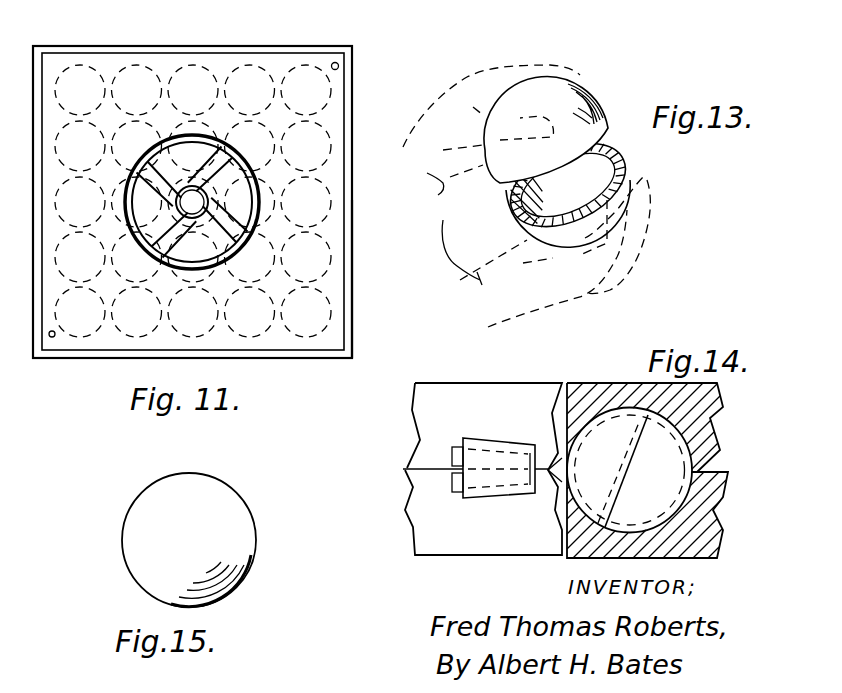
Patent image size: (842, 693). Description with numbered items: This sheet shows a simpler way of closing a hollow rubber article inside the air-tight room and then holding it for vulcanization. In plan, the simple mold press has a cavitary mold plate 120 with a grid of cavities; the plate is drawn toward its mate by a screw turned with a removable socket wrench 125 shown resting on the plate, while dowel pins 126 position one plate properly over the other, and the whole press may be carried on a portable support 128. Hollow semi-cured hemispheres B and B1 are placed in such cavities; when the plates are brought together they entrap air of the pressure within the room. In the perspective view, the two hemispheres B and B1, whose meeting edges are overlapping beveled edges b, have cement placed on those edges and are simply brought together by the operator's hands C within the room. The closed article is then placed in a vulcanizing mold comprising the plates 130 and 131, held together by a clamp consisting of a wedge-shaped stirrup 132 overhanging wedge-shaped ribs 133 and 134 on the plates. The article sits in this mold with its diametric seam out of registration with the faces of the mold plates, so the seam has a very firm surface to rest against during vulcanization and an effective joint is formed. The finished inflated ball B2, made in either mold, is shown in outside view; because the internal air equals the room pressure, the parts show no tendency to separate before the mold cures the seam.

In FIG. 11, the cavitary mold plate 120 is at (285, 352).
In FIG. 11, the removable socket wrench 125 is at (270, 182).
In FIG. 11, the dowel pins 126 is at (339, 66).
In FIG. 11, the portable support 128 is at (353, 243).
In FIG. 11, the hollow hemisphere B is at (330, 318).
In FIG. 13, the hollow hemisphere B is at (546, 130).
In FIG. 14, the hollow hemisphere B is at (629, 470).
In FIG. 13, the hollow hemisphere B1 is at (568, 187).
In FIG. 14, the hollow hemisphere B1 is at (632, 471).
In FIG. 15, the ball B2 is at (189, 540).
In FIG. 13, the beveled edges b is at (613, 148).
In FIG. 14, the beveled edges b is at (646, 416).
In FIG. 13, the operator's hands C is at (526, 196).
In FIG. 14, the mold plate 130 is at (716, 518).
In FIG. 14, the mold plate 131 is at (716, 438).
In FIG. 14, the wedge-shaped stirrup 132 is at (540, 432).
In FIG. 14, the wedge-shaped rib 133 is at (452, 483).
In FIG. 14, the wedge-shaped rib 134 is at (452, 453).